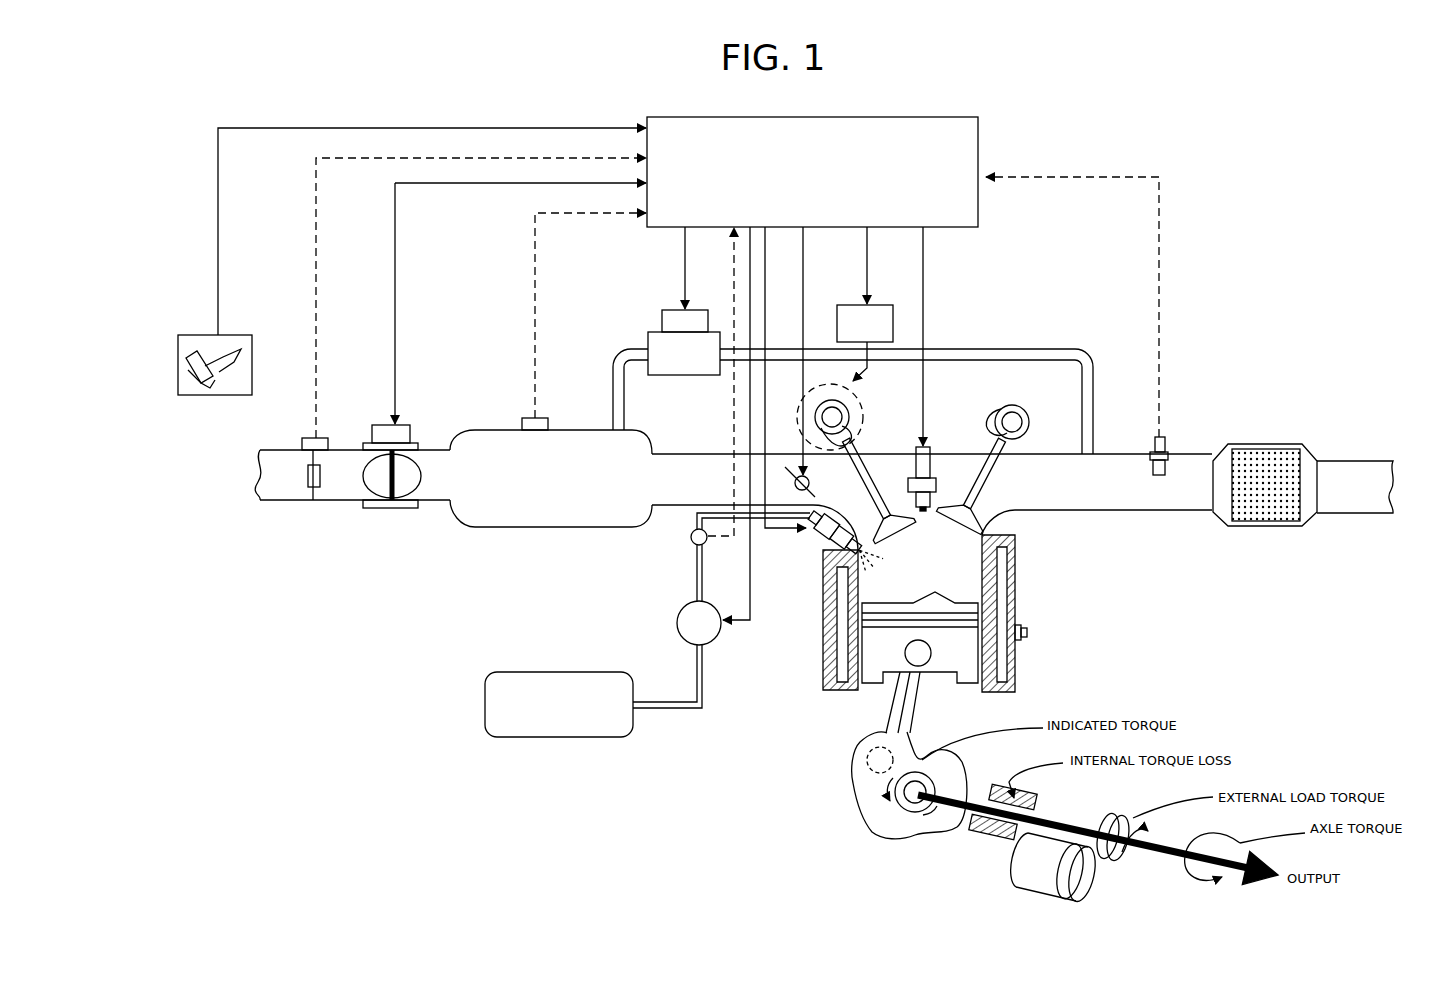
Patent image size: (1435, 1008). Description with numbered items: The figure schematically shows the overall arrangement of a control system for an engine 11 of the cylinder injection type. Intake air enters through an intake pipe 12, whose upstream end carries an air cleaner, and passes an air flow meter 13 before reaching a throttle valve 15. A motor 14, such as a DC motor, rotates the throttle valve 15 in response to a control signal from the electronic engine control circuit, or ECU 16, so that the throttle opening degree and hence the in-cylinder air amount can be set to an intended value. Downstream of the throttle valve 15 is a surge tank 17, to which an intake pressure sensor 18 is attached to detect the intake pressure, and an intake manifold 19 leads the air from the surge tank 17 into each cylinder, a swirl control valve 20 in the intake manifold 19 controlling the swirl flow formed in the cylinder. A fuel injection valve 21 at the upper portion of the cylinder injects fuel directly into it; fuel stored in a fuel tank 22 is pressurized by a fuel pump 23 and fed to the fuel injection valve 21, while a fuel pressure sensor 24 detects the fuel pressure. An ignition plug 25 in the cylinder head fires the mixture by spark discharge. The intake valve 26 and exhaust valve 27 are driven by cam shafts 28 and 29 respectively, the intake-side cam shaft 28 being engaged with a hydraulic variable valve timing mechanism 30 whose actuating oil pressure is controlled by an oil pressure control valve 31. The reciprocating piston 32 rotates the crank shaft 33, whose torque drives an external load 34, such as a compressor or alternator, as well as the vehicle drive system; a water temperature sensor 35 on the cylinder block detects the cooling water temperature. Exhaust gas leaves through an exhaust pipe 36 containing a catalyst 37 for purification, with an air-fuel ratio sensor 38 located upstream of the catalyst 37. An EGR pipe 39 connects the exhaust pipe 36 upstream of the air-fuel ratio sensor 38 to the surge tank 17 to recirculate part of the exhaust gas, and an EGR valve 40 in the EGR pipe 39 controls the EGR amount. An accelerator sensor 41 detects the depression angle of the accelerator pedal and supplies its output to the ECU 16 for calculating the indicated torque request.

The engine 11 is at (1031, 588).
The intake pipe 12 is at (335, 502).
The air flow meter 13 is at (324, 437).
The motor 14 is at (413, 425).
The throttle valve 15 is at (420, 485).
The electronic engine control circuit (ECU) 16 is at (978, 145).
The surge tank 17 is at (545, 527).
The intake pressure sensor 18 is at (546, 418).
The intake manifold 19 is at (682, 452).
The swirl control valve 20 is at (783, 491).
The fuel injection valve 21 is at (830, 546).
The fuel tank 22 is at (552, 738).
The fuel pump 23 is at (677, 623).
The fuel pressure sensor 24 is at (690, 540).
The ignition plug 25 is at (936, 470).
The intake valve 26 is at (890, 493).
The exhaust valve 27 is at (993, 520).
The intake-side cam shaft 28 is at (850, 417).
The exhaust-side cam shaft 29 is at (1023, 413).
The variable valve timing mechanism 30 is at (820, 384).
The oil pressure control valve 31 is at (880, 305).
The piston 32 is at (962, 660).
The crank shaft 33 is at (905, 812).
The external load 34 is at (1020, 873).
The water temperature sensor 35 is at (1027, 633).
The exhaust pipe 36 is at (1160, 512).
The catalyst 37 is at (1273, 450).
The air-fuel ratio sensor 38 is at (1168, 440).
The EGR pipe 39 is at (978, 349).
The EGR valve 40 is at (668, 310).
The accelerator sensor 41 is at (232, 334).